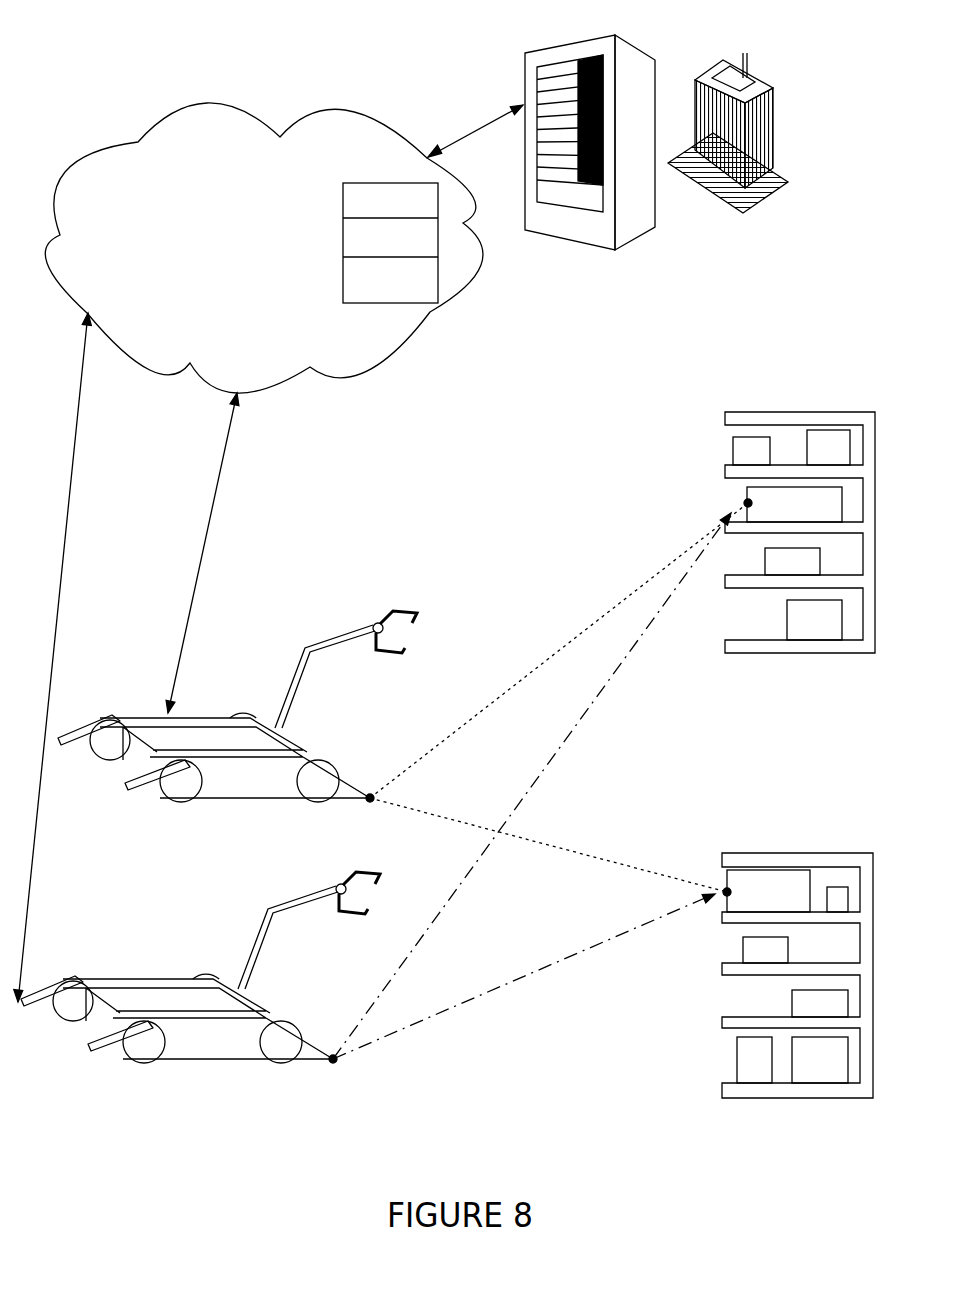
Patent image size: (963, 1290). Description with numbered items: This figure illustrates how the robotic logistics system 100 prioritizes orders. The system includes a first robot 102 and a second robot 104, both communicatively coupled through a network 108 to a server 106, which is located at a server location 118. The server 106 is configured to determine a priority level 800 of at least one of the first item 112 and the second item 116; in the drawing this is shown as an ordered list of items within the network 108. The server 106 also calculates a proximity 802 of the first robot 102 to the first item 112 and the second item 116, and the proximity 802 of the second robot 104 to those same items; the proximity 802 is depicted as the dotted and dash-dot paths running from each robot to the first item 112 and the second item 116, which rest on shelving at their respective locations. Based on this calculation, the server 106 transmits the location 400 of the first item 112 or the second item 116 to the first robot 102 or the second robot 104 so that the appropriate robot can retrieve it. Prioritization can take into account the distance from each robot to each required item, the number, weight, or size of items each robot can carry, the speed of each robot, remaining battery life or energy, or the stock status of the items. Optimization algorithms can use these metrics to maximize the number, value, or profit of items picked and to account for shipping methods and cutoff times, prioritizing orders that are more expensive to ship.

The robotic logistics system 100 is at (90, 52).
The first robot 102 is at (232, 738).
The second robot 104 is at (195, 999).
The server 106 is at (645, 205).
The network 108 is at (282, 273).
The first item 112 is at (797, 890).
The second item 116 is at (790, 483).
The server location 118 is at (777, 137).
The location 400 is at (845, 655).
The priority level 800 is at (433, 287).
The proximity 802 is at (578, 636).